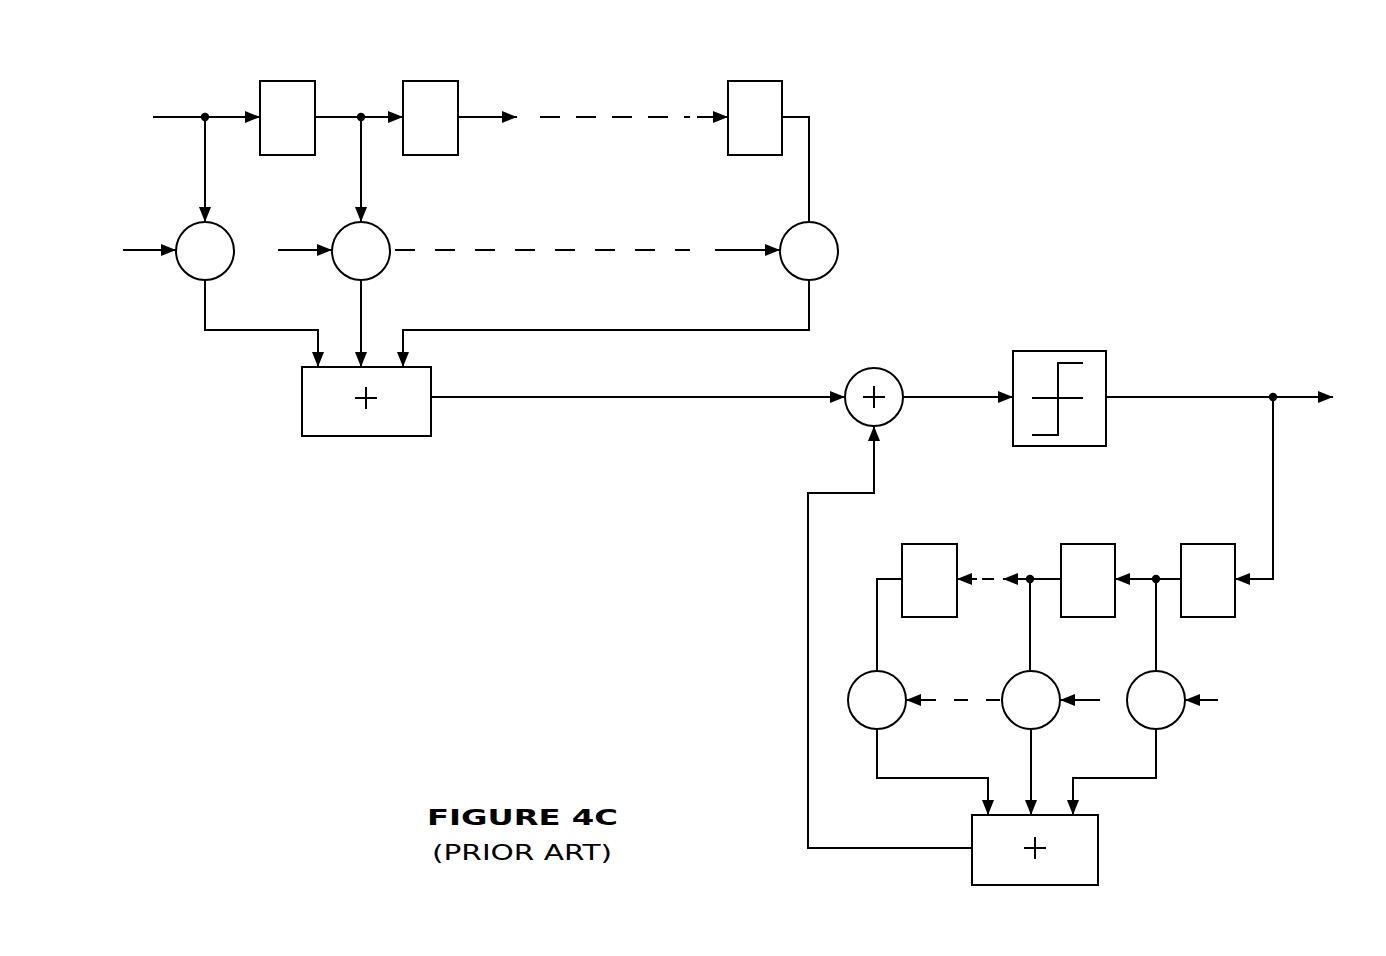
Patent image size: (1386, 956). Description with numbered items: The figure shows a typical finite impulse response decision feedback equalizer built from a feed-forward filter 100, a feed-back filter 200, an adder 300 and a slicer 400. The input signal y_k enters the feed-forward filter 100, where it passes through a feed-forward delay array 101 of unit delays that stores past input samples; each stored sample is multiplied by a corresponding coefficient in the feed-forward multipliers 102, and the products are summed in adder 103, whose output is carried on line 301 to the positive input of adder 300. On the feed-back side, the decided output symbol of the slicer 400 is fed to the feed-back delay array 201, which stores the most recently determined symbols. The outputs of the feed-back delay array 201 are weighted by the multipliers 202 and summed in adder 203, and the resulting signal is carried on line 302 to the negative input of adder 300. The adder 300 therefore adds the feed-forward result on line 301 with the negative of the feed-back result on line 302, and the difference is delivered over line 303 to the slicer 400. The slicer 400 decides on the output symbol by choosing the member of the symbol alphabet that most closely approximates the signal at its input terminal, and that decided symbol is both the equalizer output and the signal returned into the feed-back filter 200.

The feed-forward filter 100 is at (584, 222).
The feed-forward delay array 101 is at (840, 100).
The feed-forward multipliers 102 is at (898, 252).
The adder 103 is at (302, 406).
The feed-back filter 200 is at (1259, 825).
The feed-back delay array 201 is at (1286, 593).
The multipliers 202 is at (1262, 692).
The adder 203 is at (1098, 865).
The adder 300 is at (885, 370).
The line 301 is at (781, 400).
The line 302 is at (876, 460).
The line 303 is at (961, 394).
The slicer 400 is at (1088, 351).